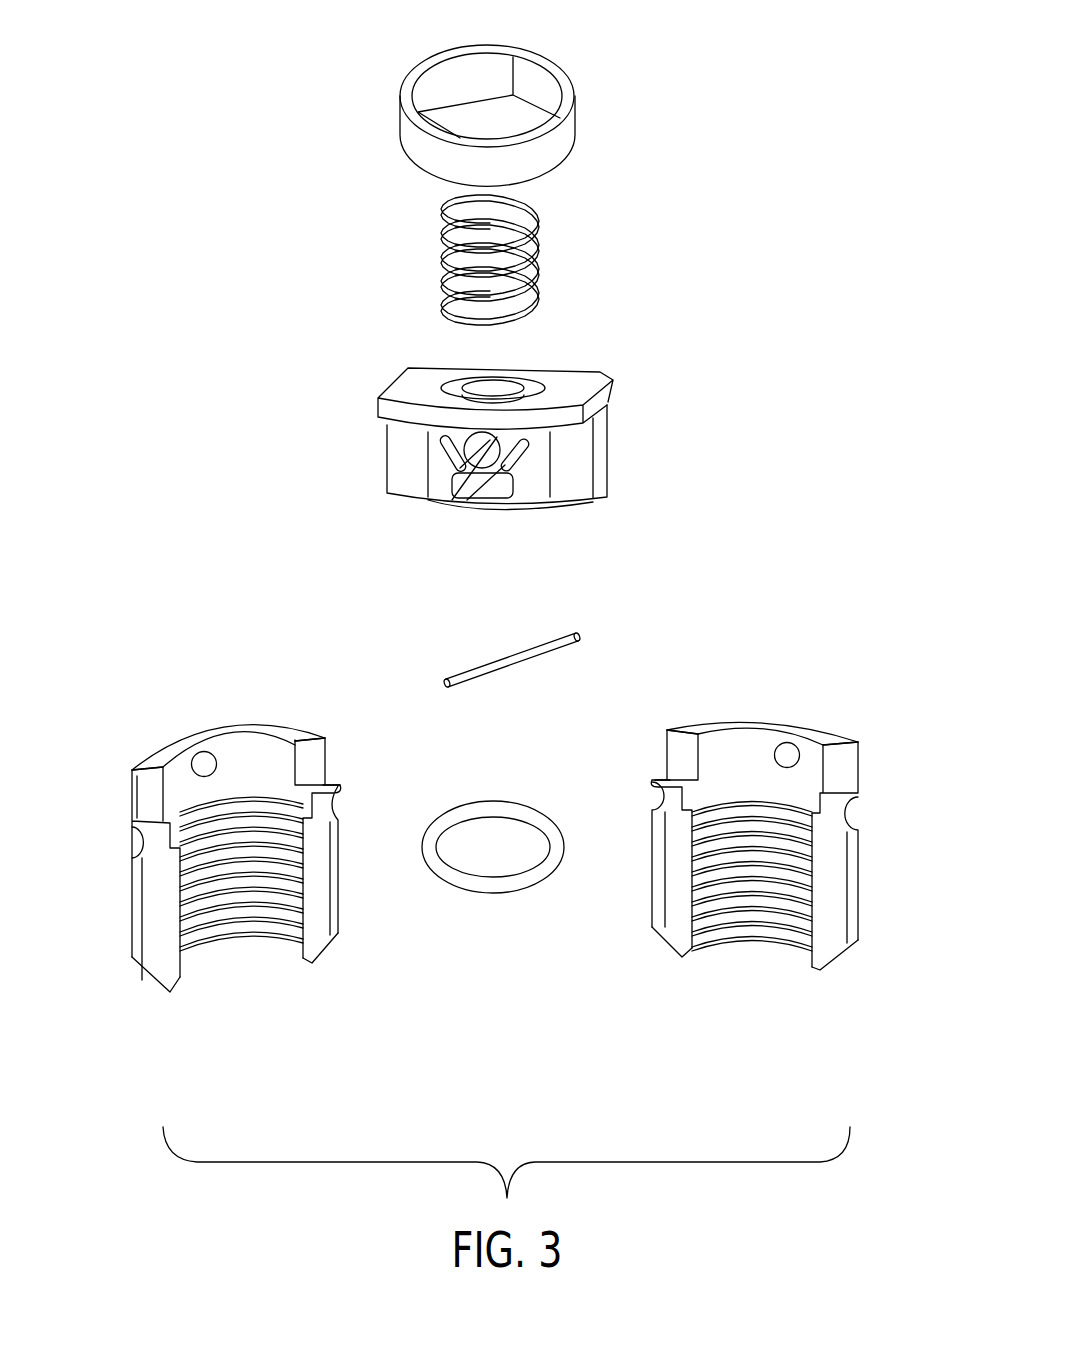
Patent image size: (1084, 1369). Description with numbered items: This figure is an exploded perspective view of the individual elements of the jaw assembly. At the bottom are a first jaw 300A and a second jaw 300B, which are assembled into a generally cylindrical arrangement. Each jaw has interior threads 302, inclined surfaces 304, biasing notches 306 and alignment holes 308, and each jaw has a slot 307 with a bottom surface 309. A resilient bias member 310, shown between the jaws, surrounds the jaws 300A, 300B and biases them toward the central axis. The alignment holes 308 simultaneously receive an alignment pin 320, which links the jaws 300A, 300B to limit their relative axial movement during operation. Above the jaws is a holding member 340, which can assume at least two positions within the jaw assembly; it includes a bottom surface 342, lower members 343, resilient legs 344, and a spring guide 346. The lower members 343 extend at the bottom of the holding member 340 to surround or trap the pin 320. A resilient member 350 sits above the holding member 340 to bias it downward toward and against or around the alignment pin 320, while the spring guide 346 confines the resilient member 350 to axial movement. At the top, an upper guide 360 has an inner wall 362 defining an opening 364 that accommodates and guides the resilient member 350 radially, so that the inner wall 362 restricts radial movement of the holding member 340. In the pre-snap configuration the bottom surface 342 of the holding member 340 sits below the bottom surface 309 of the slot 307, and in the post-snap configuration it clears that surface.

The first jaw 300A is at (109, 934).
The second jaw 300B is at (626, 840).
The interior threads 302 is at (248, 928).
The inclined surfaces 304 is at (323, 950).
The biasing notches 306 is at (336, 805).
The slot 307 is at (357, 719).
The alignment holes 308 is at (202, 760).
The bottom surface of slot 309 is at (333, 785).
The resilient bias member 310 is at (486, 913).
The alignment pin 320 is at (598, 638).
The holding member 340 is at (542, 440).
The bottom surface 342 is at (580, 503).
The lower members 343 is at (503, 503).
The resilient legs 344 is at (467, 500).
The spring guide 346 is at (504, 387).
The resilient member 350 is at (584, 261).
The upper guide 360 is at (546, 93).
The inner wall 362 is at (532, 82).
The opening 364 is at (470, 101).